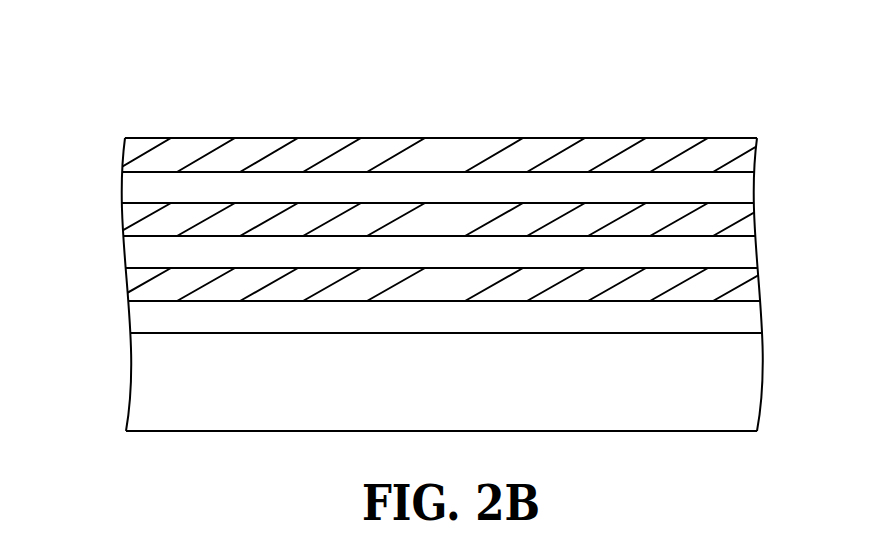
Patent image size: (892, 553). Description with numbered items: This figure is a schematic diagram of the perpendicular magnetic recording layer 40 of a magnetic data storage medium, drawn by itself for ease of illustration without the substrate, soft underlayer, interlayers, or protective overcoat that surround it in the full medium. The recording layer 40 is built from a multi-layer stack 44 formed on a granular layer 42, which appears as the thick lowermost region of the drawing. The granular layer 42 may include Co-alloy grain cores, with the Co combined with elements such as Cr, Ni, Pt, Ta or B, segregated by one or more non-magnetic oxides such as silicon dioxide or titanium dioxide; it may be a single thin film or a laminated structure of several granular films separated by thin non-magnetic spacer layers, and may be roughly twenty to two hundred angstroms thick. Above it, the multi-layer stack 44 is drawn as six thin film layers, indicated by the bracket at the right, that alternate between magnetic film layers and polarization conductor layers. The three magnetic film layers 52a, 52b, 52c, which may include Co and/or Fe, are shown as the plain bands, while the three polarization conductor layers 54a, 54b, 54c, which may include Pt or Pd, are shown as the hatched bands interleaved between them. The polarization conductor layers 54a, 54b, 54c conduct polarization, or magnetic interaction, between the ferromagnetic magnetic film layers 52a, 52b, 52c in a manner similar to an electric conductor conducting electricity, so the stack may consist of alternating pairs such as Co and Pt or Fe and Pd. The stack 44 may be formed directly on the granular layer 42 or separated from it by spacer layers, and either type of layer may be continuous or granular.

The perpendicular magnetic recording layer 40 is at (130, 85).
The granular layer 42 is at (457, 396).
The multi-layer stack 44 is at (783, 140).
The magnetic film layer 52a is at (463, 328).
The magnetic film layer 52b is at (463, 264).
The magnetic film layer 52c is at (463, 200).
The polarization conductor layer 54a is at (463, 296).
The polarization conductor layer 54b is at (463, 232).
The polarization conductor layer 54c is at (463, 166).